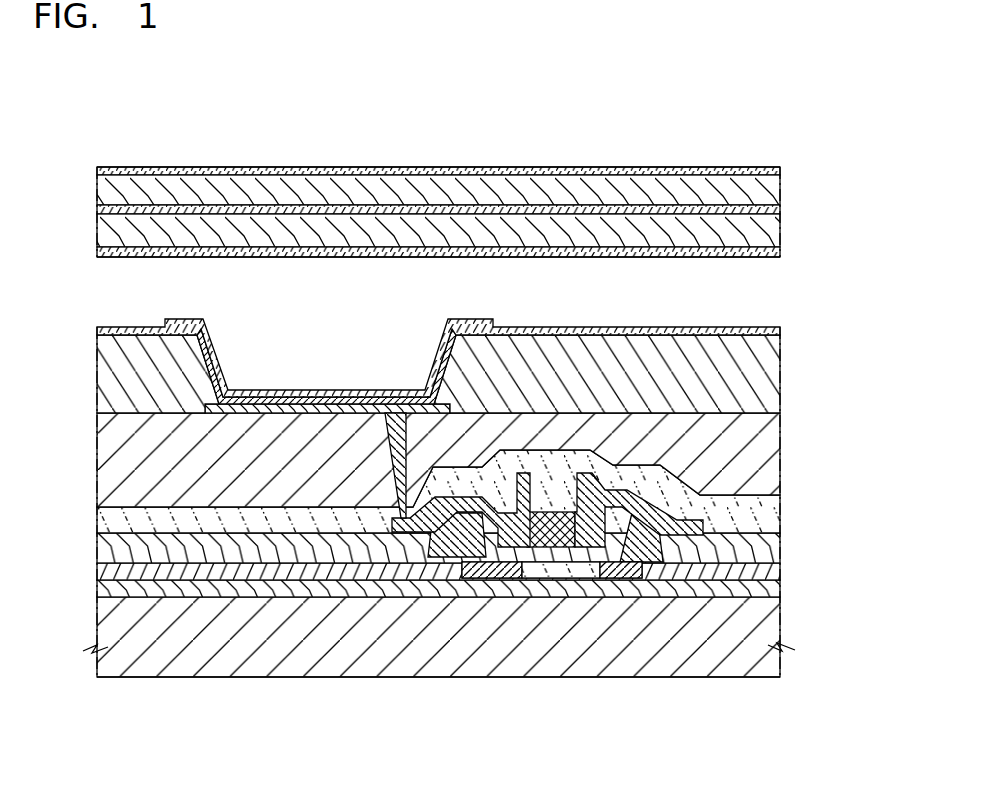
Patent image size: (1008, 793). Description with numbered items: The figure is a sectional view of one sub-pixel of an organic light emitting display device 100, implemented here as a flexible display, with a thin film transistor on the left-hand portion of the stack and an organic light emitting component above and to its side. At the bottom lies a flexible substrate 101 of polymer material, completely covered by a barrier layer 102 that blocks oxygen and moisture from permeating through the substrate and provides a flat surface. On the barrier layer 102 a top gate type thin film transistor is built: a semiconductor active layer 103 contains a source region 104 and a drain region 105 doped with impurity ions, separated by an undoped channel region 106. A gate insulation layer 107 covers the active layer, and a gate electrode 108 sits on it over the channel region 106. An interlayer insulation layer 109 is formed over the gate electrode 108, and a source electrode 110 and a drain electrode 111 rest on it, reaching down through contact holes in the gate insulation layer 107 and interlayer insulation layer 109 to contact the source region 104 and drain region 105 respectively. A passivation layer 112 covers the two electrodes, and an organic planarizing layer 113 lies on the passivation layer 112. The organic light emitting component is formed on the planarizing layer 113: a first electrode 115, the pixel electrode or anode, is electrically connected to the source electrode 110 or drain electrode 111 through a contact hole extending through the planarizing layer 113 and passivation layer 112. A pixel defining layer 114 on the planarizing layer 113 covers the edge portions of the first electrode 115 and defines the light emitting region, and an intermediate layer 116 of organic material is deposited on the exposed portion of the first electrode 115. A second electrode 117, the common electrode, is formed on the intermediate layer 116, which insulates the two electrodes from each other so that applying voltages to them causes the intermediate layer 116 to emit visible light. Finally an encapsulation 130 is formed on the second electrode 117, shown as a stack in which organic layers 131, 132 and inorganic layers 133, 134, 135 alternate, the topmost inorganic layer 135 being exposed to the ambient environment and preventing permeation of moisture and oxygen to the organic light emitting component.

The organic light emitting display device 100 is at (818, 130).
The flexible substrate 101 is at (774, 640).
The barrier layer 102 is at (774, 590).
The semiconductor active layer 103 is at (555, 644).
The source region 104 is at (492, 550).
The drain region 105 is at (622, 548).
The channel region 106 is at (540, 566).
The gate insulation layer 107 is at (774, 572).
The gate electrode 108 is at (565, 549).
The interlayer insulation layer 109 is at (774, 549).
The source electrode 110 is at (440, 520).
The drain electrode 111 is at (663, 515).
The passivation layer 112 is at (774, 515).
The planarizing layer 113 is at (774, 458).
The pixel defining layer 114 is at (774, 383).
The first electrode 115 is at (244, 410).
The intermediate layer 116 is at (407, 400).
The second electrode 117 is at (141, 327).
The encapsulation 130 is at (497, 207).
The organic layer 131 is at (774, 229).
The organic layer 132 is at (774, 193).
The inorganic layer 133 is at (468, 252).
The inorganic layer 134 is at (772, 211).
The inorganic layer 135 is at (772, 172).